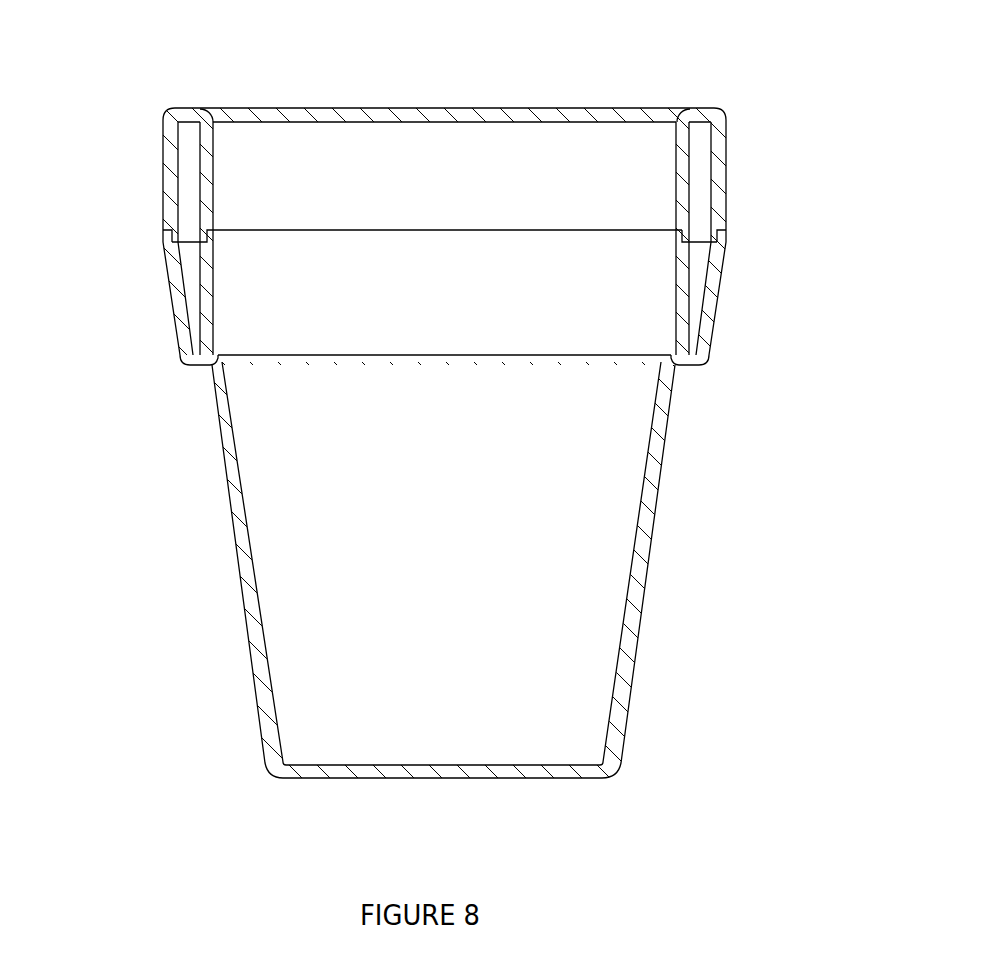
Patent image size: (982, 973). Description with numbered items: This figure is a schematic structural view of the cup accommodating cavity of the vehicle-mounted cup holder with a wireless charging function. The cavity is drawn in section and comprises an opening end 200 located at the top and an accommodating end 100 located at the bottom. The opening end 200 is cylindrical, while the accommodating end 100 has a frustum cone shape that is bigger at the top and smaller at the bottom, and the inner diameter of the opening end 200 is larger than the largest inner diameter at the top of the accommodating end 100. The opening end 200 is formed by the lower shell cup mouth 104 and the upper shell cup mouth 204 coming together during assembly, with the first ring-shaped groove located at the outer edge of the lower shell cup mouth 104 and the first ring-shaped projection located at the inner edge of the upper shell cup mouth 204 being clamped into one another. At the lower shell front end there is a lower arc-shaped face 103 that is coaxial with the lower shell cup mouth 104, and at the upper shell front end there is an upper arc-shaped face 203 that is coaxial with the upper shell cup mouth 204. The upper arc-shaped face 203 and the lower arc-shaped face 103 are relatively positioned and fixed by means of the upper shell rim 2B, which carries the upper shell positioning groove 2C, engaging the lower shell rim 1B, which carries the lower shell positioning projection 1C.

The accommodating end 100 is at (505, 585).
The opening end 200 is at (523, 185).
The upper arc-shaped face 203 is at (170, 188).
The upper shell cup mouth 204 is at (208, 162).
The lower arc-shaped face 103 is at (172, 283).
The lower shell cup mouth 104 is at (205, 332).
The upper shell positioning groove 2C is at (165, 231).
The upper shell rim 2B is at (177, 233).
The lower shell positioning projection 1C is at (723, 235).
The lower shell rim 1B is at (722, 245).